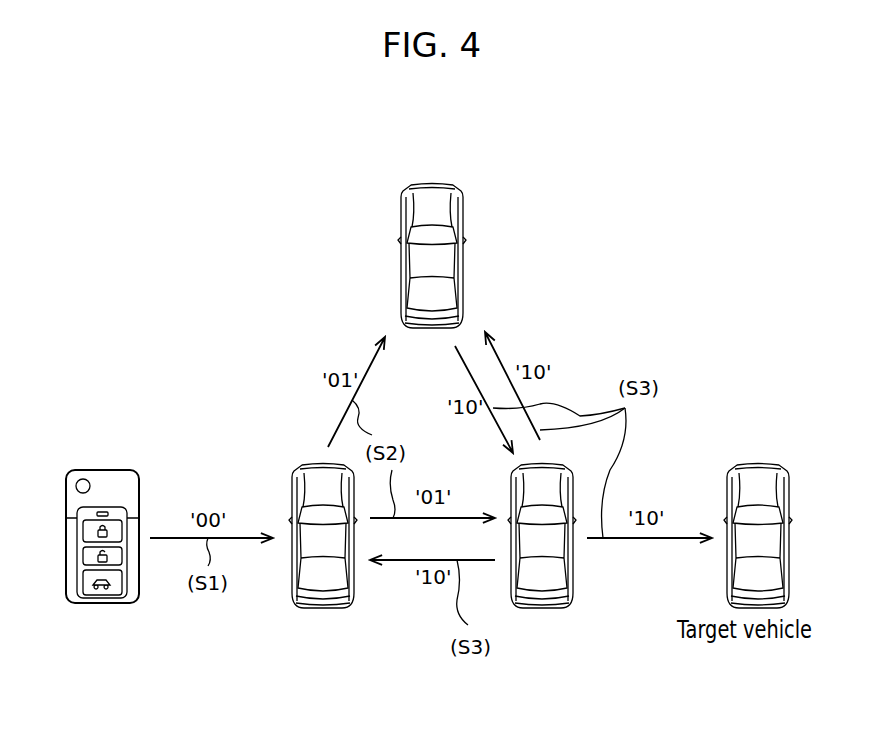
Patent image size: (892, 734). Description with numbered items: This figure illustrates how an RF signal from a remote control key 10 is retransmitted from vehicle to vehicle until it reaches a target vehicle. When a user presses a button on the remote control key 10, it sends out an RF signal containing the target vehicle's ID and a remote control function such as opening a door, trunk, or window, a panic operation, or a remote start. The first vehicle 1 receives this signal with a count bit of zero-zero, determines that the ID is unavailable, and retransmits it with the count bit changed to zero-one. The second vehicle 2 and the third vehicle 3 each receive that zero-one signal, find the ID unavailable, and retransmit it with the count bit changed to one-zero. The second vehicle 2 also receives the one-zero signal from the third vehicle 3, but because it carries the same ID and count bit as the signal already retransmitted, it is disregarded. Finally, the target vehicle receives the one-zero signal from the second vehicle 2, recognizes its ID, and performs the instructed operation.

The remote control key 10 is at (110, 470).
The first vehicle 1 is at (323, 554).
The second vehicle 2 is at (542, 554).
The third vehicle 3 is at (432, 237).